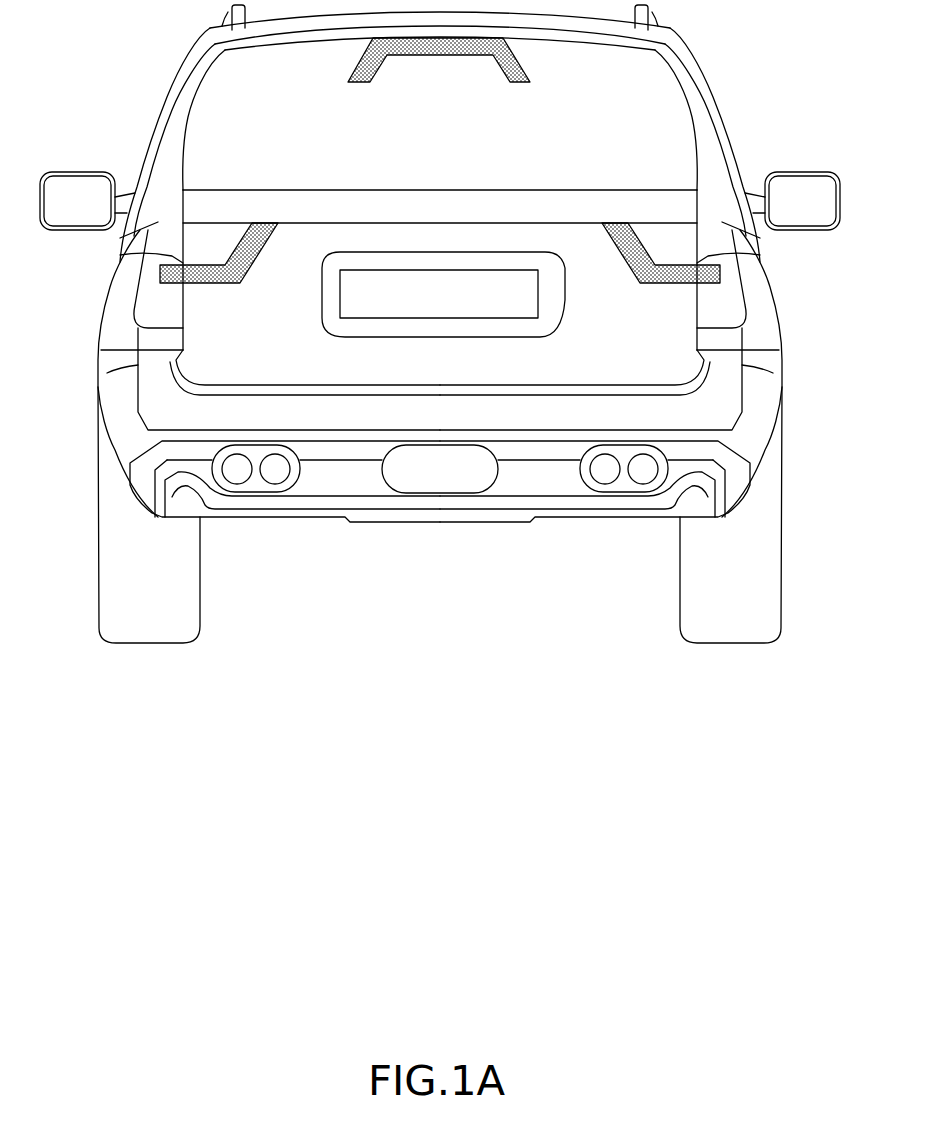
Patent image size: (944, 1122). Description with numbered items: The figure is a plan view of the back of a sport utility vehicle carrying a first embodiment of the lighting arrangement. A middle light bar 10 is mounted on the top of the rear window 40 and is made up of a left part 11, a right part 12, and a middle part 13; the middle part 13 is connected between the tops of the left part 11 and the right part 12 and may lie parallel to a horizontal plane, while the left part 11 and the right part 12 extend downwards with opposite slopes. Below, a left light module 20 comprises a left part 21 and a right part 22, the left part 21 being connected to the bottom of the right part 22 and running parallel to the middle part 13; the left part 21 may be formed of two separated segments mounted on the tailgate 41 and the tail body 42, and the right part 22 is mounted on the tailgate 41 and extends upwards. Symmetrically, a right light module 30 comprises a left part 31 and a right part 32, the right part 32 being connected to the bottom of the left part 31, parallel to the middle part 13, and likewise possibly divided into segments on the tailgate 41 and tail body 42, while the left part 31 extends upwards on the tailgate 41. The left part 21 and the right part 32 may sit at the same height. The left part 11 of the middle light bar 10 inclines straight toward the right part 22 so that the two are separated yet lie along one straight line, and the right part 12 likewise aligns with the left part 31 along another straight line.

The middle light bar 10 is at (426, 80).
The left part 11 is at (349, 80).
The right part 12 is at (530, 78).
The middle part 13 is at (437, 50).
The left light module 20 is at (186, 286).
The left part 21 is at (120, 252).
The right part 22 is at (260, 248).
The right light module 30 is at (698, 289).
The left part 31 is at (618, 241).
The right part 32 is at (673, 283).
The rear window 40 is at (662, 113).
The tailgate 41 is at (445, 227).
The tail body 42 is at (140, 308).